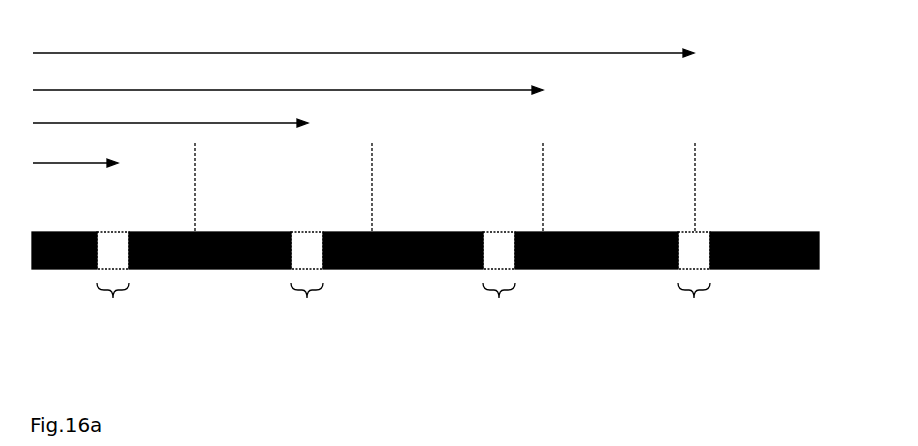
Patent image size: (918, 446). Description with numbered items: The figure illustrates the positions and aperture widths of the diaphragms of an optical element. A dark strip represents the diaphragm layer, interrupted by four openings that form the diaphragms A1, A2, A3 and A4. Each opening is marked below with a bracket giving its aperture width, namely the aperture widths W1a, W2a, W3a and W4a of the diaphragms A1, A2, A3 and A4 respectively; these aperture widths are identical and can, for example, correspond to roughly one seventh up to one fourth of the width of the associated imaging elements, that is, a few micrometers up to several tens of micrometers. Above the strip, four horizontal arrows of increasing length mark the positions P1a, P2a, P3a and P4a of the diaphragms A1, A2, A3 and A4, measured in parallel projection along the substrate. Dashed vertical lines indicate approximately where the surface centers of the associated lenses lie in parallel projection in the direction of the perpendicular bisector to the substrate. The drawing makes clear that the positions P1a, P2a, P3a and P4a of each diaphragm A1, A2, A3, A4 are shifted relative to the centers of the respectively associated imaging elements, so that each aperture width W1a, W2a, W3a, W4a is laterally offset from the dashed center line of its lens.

The position of first diaphragm P1a is at (75, 150).
The position of second diaphragm P2a is at (184, 113).
The position of third diaphragm P3a is at (288, 78).
The position of fourth diaphragm P4a is at (363, 41).
The aperture width of first diaphragm W1a is at (122, 310).
The aperture width of second diaphragm W2a is at (316, 310).
The aperture width of third diaphragm W3a is at (509, 310).
The aperture width of fourth diaphragm W4a is at (704, 310).
The first diaphragm A1 is at (113, 305).
The second diaphragm A2 is at (308, 305).
The third diaphragm A3 is at (499, 305).
The fourth diaphragm A4 is at (694, 305).